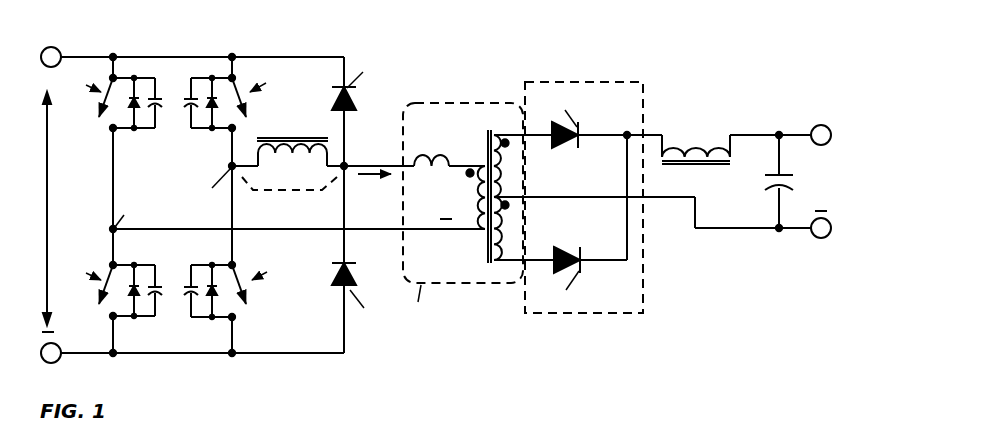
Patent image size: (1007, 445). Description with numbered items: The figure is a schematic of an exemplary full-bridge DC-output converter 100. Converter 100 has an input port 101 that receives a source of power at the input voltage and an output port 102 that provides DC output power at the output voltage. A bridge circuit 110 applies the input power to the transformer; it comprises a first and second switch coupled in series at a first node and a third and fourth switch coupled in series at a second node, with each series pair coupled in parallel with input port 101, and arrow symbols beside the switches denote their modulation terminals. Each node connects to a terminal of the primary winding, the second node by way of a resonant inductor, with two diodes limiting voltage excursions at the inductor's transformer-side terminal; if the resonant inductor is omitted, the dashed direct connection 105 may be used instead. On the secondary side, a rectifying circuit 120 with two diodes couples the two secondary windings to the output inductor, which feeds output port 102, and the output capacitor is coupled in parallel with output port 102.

The full-bridge DC-output converter 100 is at (453, 42).
The input port 101 is at (59, 50).
The output port 102 is at (813, 127).
The direct connection 105 is at (302, 190).
The bridge circuit 110 is at (233, 43).
The rectifying circuit 120 is at (610, 81).